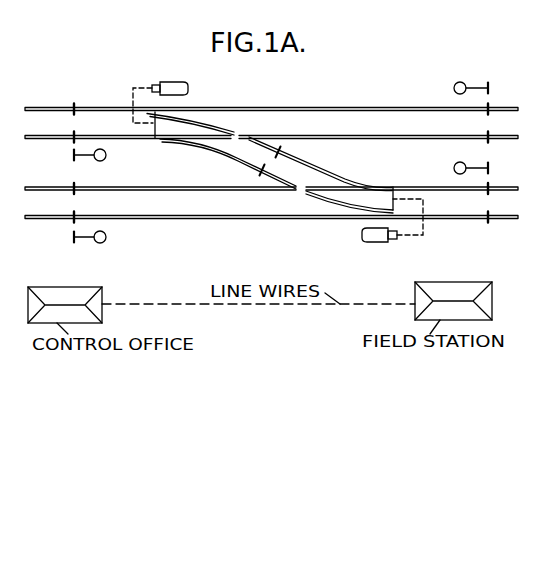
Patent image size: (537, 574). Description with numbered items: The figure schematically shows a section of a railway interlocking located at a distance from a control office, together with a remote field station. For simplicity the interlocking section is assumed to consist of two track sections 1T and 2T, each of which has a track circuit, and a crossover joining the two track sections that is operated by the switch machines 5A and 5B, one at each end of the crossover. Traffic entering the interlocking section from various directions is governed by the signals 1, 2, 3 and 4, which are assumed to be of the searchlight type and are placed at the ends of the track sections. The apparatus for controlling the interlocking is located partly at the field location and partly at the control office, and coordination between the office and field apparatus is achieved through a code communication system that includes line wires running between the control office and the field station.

The signal 1 is at (92, 158).
The signal 2 is at (93, 240).
The signal 3 is at (470, 87).
The signal 4 is at (470, 167).
The switch machine 5A is at (171, 82).
The switch machine 5B is at (382, 243).
The track section 1T is at (271, 123).
The track section 2T is at (271, 203).